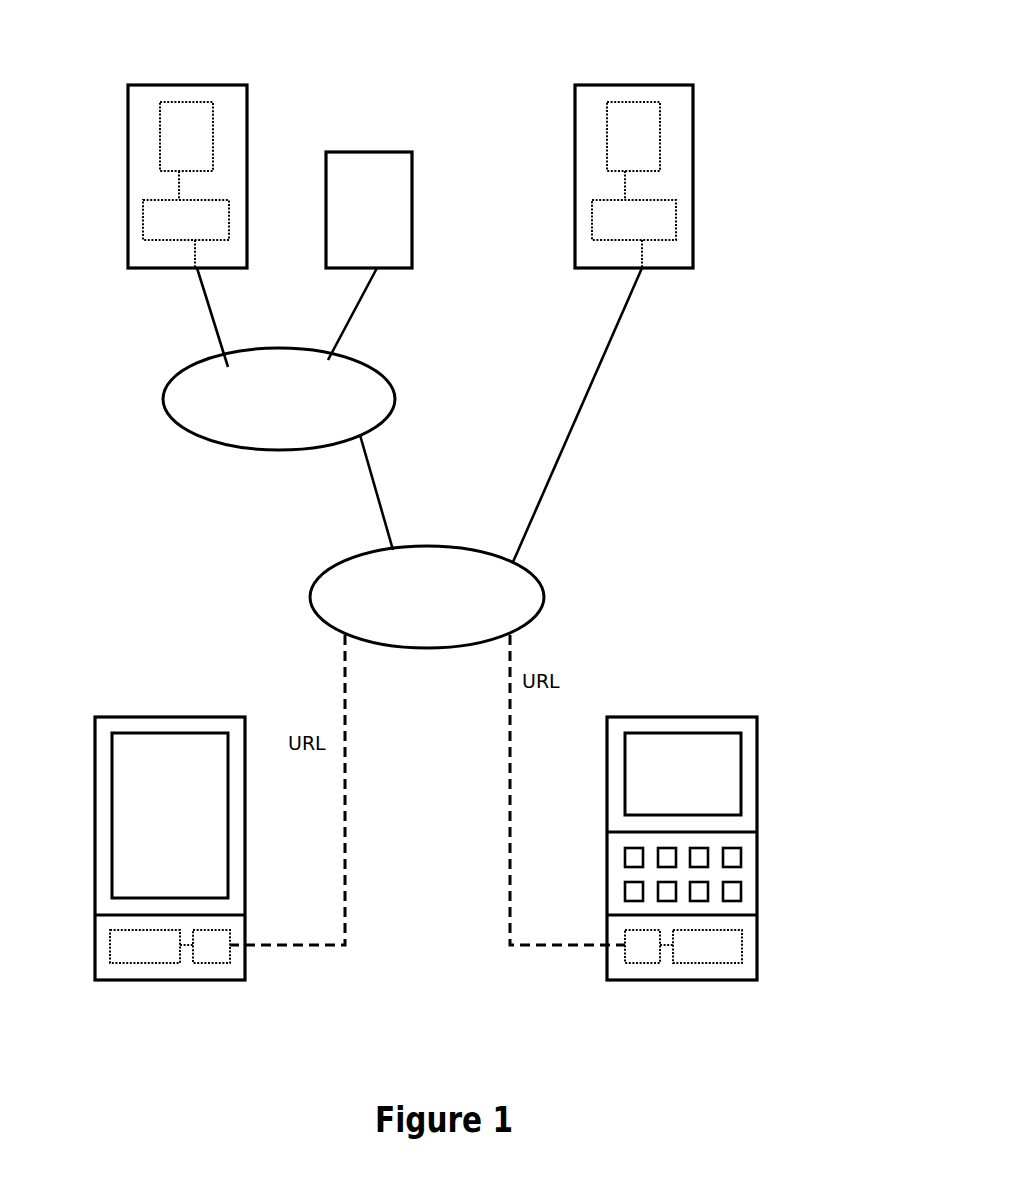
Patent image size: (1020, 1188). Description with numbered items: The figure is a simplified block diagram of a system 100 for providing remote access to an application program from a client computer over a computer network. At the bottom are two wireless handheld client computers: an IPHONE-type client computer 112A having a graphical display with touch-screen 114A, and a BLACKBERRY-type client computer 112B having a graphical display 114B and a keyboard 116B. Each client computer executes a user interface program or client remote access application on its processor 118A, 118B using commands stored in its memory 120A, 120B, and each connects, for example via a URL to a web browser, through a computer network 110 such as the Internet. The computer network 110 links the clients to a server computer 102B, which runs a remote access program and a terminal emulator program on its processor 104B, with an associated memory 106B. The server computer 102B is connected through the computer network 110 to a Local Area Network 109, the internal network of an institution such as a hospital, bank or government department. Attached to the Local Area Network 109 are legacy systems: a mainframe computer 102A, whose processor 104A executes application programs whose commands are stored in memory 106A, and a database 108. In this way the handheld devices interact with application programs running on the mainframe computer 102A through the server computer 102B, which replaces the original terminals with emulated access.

The system 100 is at (818, 132).
The mainframe computer 102A is at (176, 85).
The server computer 102B is at (636, 85).
The processor 104A is at (178, 218).
The processor 104B is at (642, 218).
The memory 106A is at (195, 118).
The memory 106B is at (642, 118).
The database 108 is at (360, 202).
The Local Area Network (LAN) 109 is at (328, 383).
The computer network 110 is at (508, 598).
The client computer 112A is at (95, 753).
The client computer 112B is at (740, 723).
The graphical display with touch-screen 114A is at (162, 822).
The graphical display 114B is at (692, 772).
The keyboard 116B is at (723, 872).
The processor 118A is at (210, 953).
The processor 118B is at (642, 953).
The memory 120A is at (145, 953).
The memory 120B is at (707, 953).